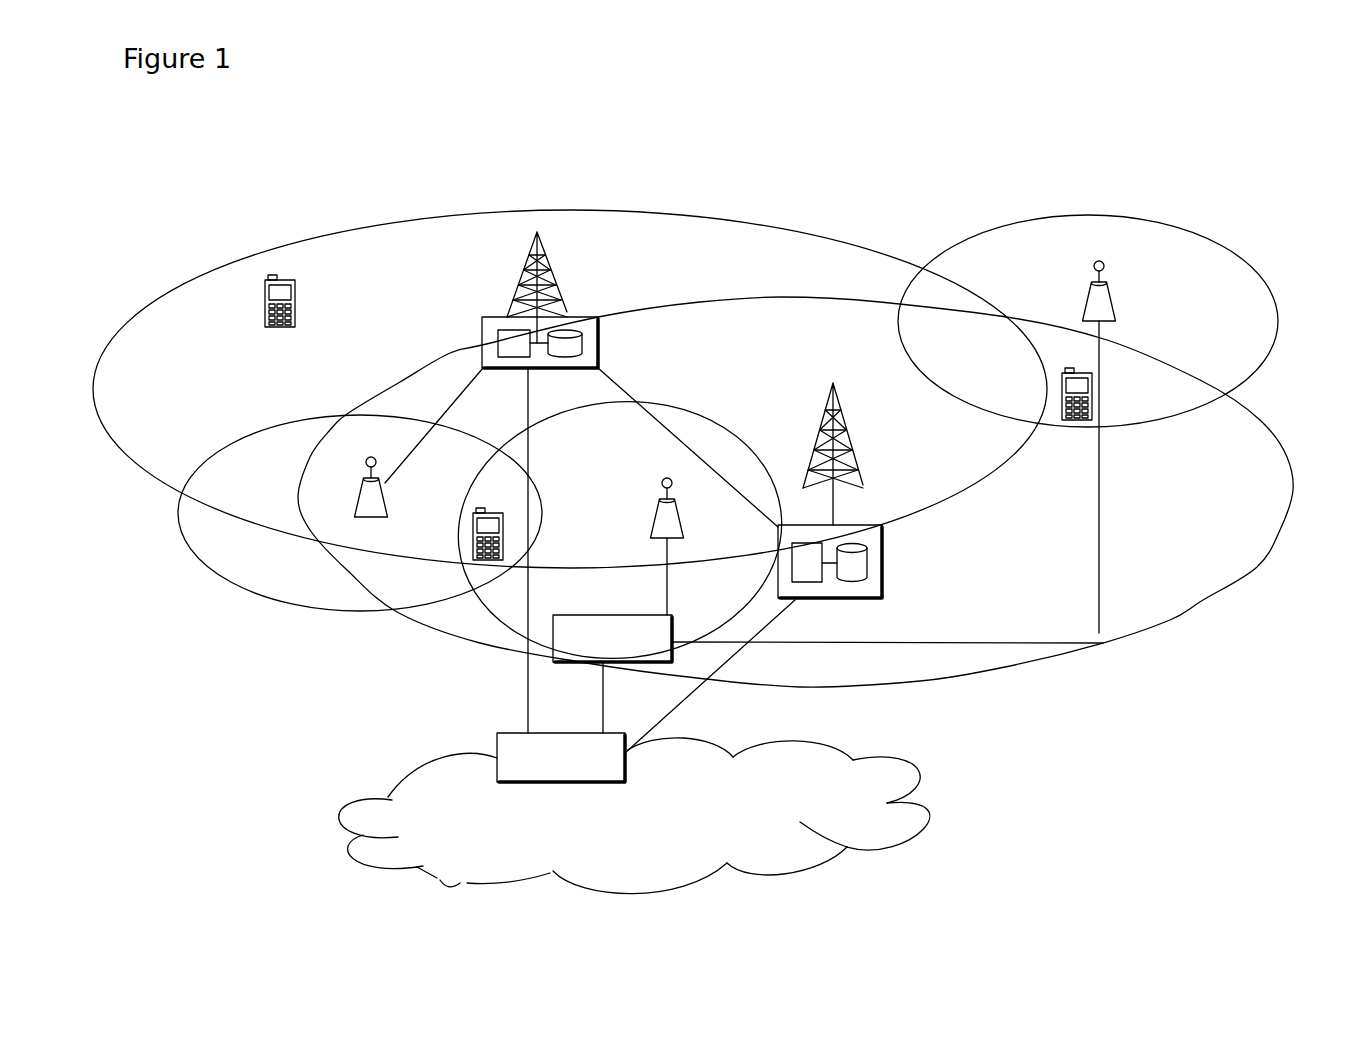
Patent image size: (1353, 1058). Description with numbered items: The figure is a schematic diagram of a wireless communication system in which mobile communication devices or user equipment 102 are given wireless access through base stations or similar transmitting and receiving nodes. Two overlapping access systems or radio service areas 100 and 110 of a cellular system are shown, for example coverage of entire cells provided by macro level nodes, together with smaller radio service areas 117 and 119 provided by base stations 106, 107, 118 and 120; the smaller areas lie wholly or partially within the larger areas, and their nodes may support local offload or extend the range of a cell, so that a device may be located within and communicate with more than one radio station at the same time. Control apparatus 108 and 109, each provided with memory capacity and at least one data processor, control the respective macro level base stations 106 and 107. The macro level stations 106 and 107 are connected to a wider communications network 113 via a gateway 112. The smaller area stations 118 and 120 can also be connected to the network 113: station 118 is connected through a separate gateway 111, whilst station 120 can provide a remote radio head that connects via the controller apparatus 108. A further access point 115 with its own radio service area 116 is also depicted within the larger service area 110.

The radio service area 100 is at (188, 262).
The user equipment 102 is at (265, 317).
The macro level base station 106 is at (520, 282).
The macro level base station 107 is at (852, 452).
The control apparatus 108 is at (482, 332).
The control apparatus 109 is at (872, 588).
The radio service area 110 is at (1167, 632).
The gateway 111 is at (562, 644).
The gateway 112 is at (497, 733).
The wider communications network 113 is at (420, 793).
The access point 115 is at (1247, 240).
The access point coverage area 116 is at (990, 230).
The smaller radio service area 117 is at (700, 413).
The smaller area station 118 is at (668, 530).
The smaller radio service area 119 is at (265, 595).
The smaller area station 120 is at (357, 492).